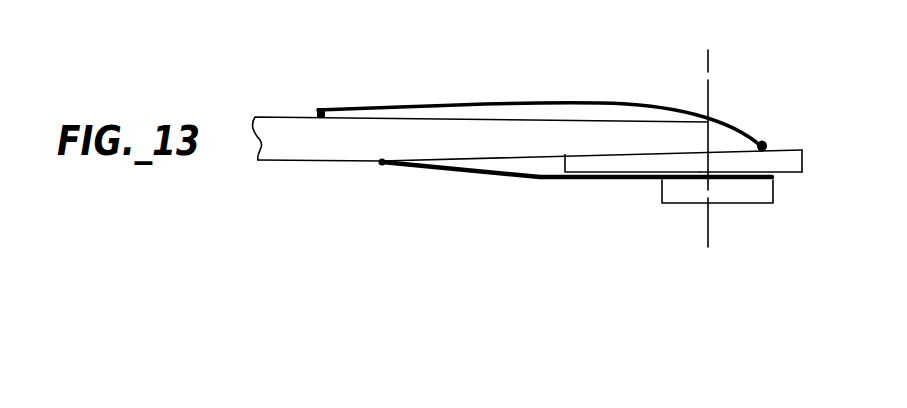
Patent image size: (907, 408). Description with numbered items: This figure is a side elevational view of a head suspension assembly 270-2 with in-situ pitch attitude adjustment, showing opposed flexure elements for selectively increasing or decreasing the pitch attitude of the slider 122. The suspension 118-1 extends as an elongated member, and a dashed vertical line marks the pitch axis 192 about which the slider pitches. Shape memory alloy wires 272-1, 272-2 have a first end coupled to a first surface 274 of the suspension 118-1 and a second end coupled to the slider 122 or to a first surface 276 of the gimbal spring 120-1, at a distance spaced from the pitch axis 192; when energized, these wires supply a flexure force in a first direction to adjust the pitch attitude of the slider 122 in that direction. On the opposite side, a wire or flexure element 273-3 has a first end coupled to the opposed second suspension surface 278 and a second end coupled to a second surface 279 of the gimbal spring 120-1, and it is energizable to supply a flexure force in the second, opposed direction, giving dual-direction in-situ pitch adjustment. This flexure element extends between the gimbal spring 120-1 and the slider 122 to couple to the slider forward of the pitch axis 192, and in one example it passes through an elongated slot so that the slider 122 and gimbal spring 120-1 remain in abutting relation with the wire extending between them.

The suspension 118-1 is at (557, 143).
The gimbal spring 120-1 is at (803, 158).
The slider 122 is at (697, 189).
The pitch axis 192 is at (707, 80).
The head suspension assembly 270-2 is at (546, 82).
The shape memory alloy wire 272-1 is at (540, 98).
The shape memory alloy wire 272-2 is at (413, 103).
The wire or flexure element 273-3 is at (462, 175).
The first surface of the suspension 274 is at (273, 117).
The first surface of the gimbal spring 276 is at (784, 148).
The opposed second suspension surface 278 is at (304, 161).
The second surface of the gimbal spring 279 is at (790, 174).